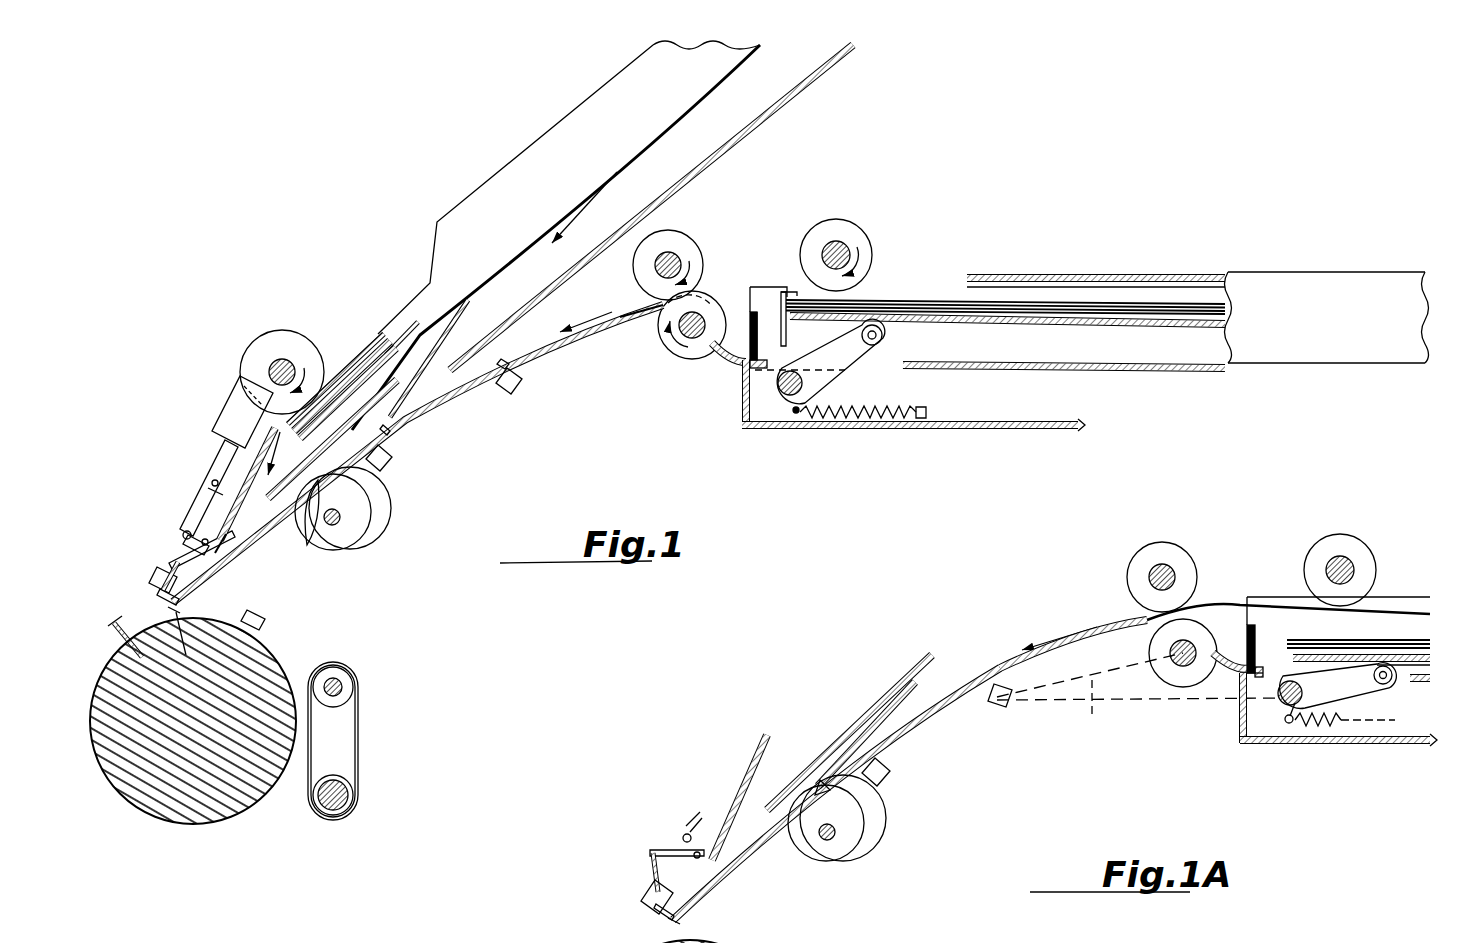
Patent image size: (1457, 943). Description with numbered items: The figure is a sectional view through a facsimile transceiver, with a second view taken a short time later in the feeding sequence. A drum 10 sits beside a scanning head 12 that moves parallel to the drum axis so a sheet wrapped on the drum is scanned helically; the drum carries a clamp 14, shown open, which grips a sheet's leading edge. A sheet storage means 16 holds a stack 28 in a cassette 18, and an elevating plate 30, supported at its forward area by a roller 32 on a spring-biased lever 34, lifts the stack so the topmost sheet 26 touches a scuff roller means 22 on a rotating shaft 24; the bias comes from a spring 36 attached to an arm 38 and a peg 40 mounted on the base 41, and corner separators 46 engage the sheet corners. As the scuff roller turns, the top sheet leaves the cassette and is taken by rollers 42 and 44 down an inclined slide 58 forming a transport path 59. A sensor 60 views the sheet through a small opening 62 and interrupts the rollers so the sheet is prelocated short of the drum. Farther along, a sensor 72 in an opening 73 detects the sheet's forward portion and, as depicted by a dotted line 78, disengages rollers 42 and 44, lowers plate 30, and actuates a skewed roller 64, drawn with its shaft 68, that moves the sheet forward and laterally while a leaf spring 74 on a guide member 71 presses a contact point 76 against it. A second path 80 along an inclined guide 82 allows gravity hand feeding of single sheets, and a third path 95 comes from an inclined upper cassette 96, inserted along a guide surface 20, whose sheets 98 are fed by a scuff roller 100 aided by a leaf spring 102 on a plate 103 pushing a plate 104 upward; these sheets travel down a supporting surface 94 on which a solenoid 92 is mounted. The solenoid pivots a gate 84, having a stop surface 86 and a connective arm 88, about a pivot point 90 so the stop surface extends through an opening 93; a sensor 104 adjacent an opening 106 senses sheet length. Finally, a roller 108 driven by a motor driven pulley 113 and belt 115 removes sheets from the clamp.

In FIG. 1, the drum 10 is at (250, 655).
In FIG. 1A, the drum 10 is at (650, 940).
In FIG. 1, the scanning head 12 is at (265, 614).
In FIG. 1, the clamp 14 is at (112, 626).
In FIG. 1, the sheet storage means 16 is at (1020, 275).
In FIG. 1, the cassette 18 is at (1148, 275).
In FIG. 1, the guide surface 20 is at (450, 410).
In FIG. 1A, the guide surface 20 is at (955, 712).
In FIG. 1, the scuff roller means 22 is at (826, 223).
In FIG. 1A, the scuff roller means 22 is at (1333, 552).
In FIG. 1, the rotating shaft 24 is at (846, 250).
In FIG. 1, the topmost sheet 26 is at (895, 300).
In FIG. 1A, the topmost sheet 26 is at (1220, 605).
In FIG. 1, the stack 28 is at (1135, 332).
In FIG. 1A, the stack 28 is at (1320, 650).
In FIG. 1, the plate 30 is at (1032, 372).
In FIG. 1A, the plate 30 is at (1418, 685).
In FIG. 1, the roller 32 is at (885, 338).
In FIG. 1A, the roller 32 is at (1387, 690).
In FIG. 1, the spring-biased lever 34 is at (835, 365).
In FIG. 1A, the spring-biased lever 34 is at (1343, 690).
In FIG. 1, the spring 36 is at (870, 405).
In FIG. 1A, the spring 36 is at (1325, 725).
In FIG. 1, the arm 38 is at (790, 410).
In FIG. 1A, the arm 38 is at (1282, 722).
In FIG. 1, the peg 40 is at (750, 295).
In FIG. 1A, the peg 40 is at (1338, 685).
In FIG. 1, the base 41 is at (1005, 432).
In FIG. 1, the roller 42 is at (678, 245).
In FIG. 1A, the roller 42 is at (1162, 562).
In FIG. 1, the roller 44 is at (696, 350).
In FIG. 1A, the roller 44 is at (1185, 672).
In FIG. 1, the corner separator 46 is at (784, 290).
In FIG. 1, the inclined slide 58 is at (600, 340).
In FIG. 1, the transport path 59 is at (585, 318).
In FIG. 1A, the transport path 59 is at (1080, 630).
In FIG. 1, the sensor 60 is at (512, 393).
In FIG. 1A, the sensor 60 is at (1002, 708).
In FIG. 1, the small opening 62 is at (506, 362).
In FIG. 1, the roller 64 is at (375, 503).
In FIG. 1A, the roller 64 is at (872, 828).
In FIG. 1, the drum shaft 68 is at (338, 522).
In FIG. 1A, the drum shaft 68 is at (835, 837).
In FIG. 1, the guide member 71 is at (440, 345).
In FIG. 1A, the guide member 71 is at (912, 662).
In FIG. 1, the sensor 72 is at (395, 460).
In FIG. 1A, the sensor 72 is at (892, 772).
In FIG. 1, the opening 73 is at (390, 436).
In FIG. 1, the leaf spring 74 is at (345, 452).
In FIG. 1A, the leaf spring 74 is at (828, 745).
In FIG. 1, the contact point 76 is at (310, 540).
In FIG. 1A, the contact point 76 is at (815, 785).
In FIG. 1A, the dotted line 78 is at (1125, 705).
In FIG. 1, the sheet feed path 80 is at (615, 220).
In FIG. 1, the inclined guide 82 is at (805, 95).
In FIG. 1, the gate 84 is at (165, 555).
In FIG. 1A, the gate 84 is at (660, 850).
In FIG. 1, the stop surface 86 is at (190, 647).
In FIG. 1, the connective arm 88 is at (183, 540).
In FIG. 1, the pivot point 90 is at (225, 545).
In FIG. 1, the solenoid 92 is at (213, 446).
In FIG. 1, the opening 93 is at (185, 610).
In FIG. 1A, the opening 93 is at (690, 920).
In FIG. 1, the supporting surface 94 is at (245, 515).
In FIG. 1A, the supporting surface 94 is at (750, 770).
In FIG. 1, the sheet feed path 95 is at (262, 435).
In FIG. 1, the cassette 96 is at (548, 148).
In FIG. 1, the sheets 98 is at (360, 345).
In FIG. 1, the scuff roller 100 is at (262, 352).
In FIG. 1, the leaf spring 102 is at (370, 340).
In FIG. 1, the plate 103 is at (410, 340).
In FIG. 1, the plate 104 is at (345, 360).
In FIG. 1A, the plate 104 is at (645, 895).
In FIG. 1, the opening 106 is at (160, 596).
In FIG. 1A, the opening 106 is at (655, 910).
In FIG. 1, the roller 108 is at (355, 680).
In FIG. 1, the motor driven pulley 113 is at (352, 800).
In FIG. 1, the belt 115 is at (360, 745).